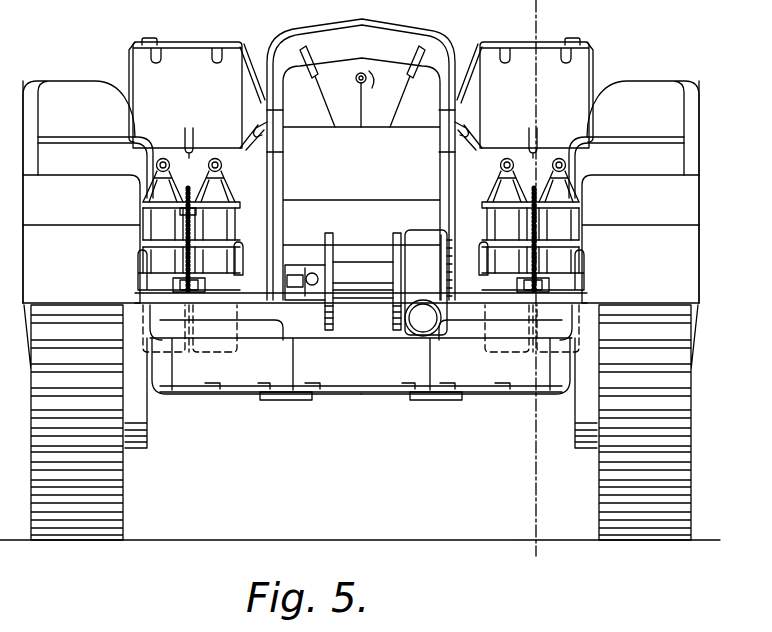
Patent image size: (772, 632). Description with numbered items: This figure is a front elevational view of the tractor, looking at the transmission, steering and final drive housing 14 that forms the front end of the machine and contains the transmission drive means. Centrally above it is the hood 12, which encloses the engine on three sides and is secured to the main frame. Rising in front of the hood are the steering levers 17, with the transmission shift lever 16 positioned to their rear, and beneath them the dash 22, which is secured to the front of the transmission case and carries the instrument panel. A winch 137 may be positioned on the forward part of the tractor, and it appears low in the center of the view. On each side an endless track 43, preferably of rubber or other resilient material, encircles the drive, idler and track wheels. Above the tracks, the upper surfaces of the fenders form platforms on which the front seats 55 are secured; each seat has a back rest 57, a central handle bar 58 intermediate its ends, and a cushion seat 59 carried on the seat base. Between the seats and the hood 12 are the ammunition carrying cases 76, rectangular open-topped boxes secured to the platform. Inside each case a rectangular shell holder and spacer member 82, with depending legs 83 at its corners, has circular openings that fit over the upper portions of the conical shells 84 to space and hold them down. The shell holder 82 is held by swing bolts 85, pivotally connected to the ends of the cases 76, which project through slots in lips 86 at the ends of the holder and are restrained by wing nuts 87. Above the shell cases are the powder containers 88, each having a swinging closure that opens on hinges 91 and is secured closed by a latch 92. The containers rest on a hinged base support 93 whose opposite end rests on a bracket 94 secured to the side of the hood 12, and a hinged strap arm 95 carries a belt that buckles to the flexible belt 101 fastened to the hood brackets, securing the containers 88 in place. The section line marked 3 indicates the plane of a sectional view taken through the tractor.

The section line 3- 3 is at (528, 556).
The hood 12 is at (404, 32).
The transmission, steering and final drive housing 14 is at (361, 376).
The transmission shift lever 16 is at (372, 69).
The steering levers 17 is at (324, 106).
The dash 22 is at (361, 179).
The endless track 43 is at (602, 504).
The front seats 55 is at (651, 96).
The back rest 57 is at (699, 157).
The central handle bar 58 is at (642, 137).
The cushion seat 59 is at (361, 239).
The ammunition carrying cases 76 is at (596, 290).
The shell holder and spacer member 82 is at (492, 206).
The depending legs 83 is at (483, 258).
The shells 84 is at (572, 202).
The swing bolts 85 is at (540, 262).
The lips 86 is at (182, 214).
The wing nuts 87 is at (562, 187).
The powder containers 88 is at (542, 44).
The hinges 91 is at (578, 40).
The latch 92 is at (536, 134).
The hinged base support 93 is at (365, 143).
The bracket 94 is at (268, 126).
The hinged strap arm 95 is at (592, 98).
The flexible belt 101 is at (470, 90).
The winch 137 is at (354, 275).